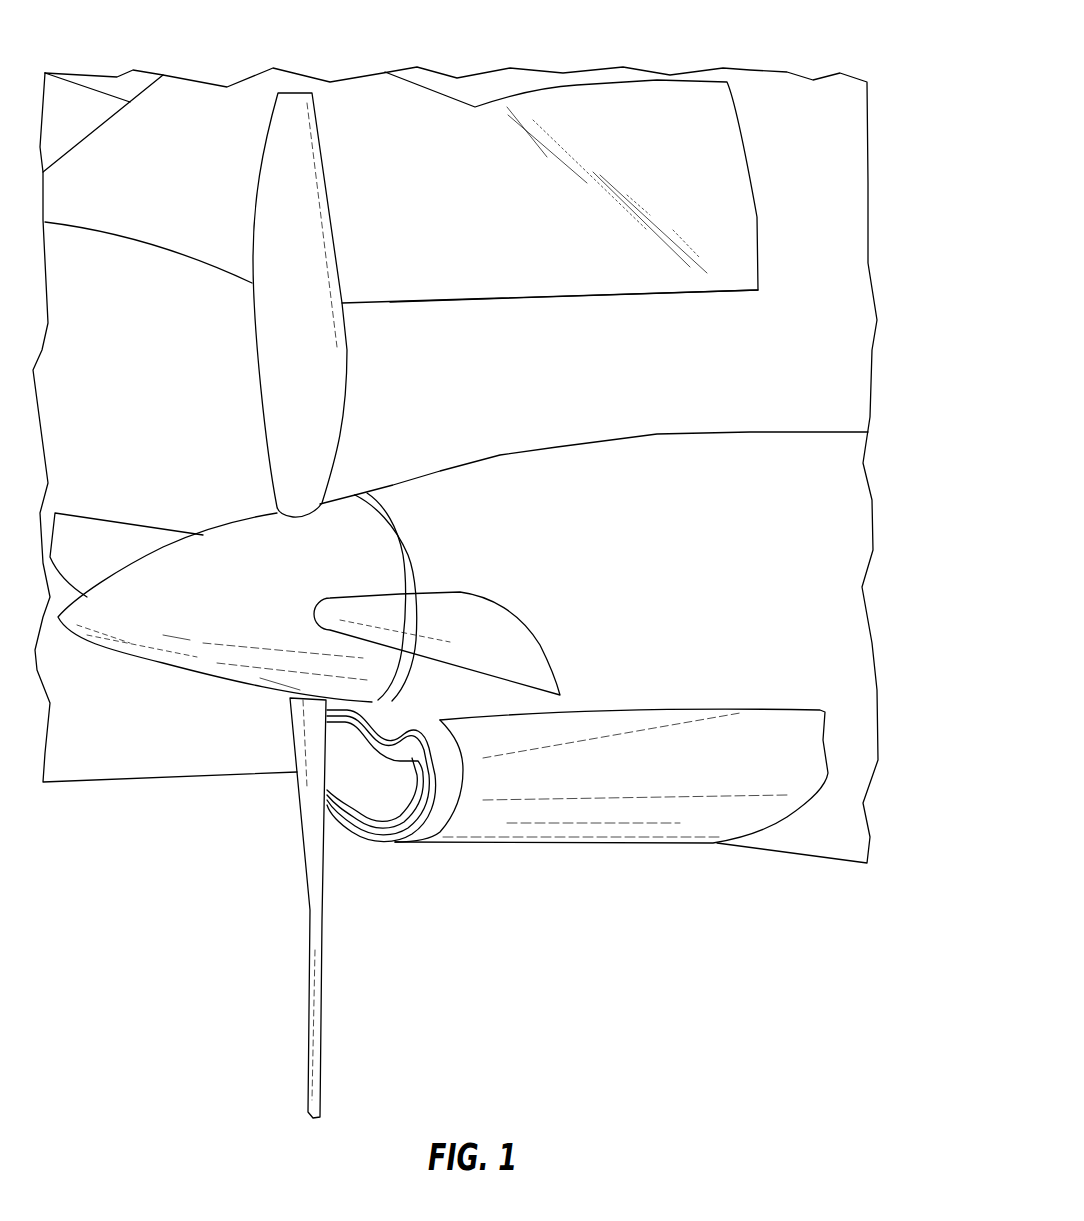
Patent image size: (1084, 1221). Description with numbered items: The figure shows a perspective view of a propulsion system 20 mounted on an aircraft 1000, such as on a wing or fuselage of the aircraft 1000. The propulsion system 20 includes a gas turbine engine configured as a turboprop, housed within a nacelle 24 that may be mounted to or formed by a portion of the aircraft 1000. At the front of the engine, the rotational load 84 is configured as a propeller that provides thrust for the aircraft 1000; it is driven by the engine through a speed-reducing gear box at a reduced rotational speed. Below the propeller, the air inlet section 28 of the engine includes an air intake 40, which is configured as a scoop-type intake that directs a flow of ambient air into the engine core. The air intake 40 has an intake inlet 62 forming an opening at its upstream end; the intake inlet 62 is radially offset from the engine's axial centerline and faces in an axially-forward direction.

The aircraft 1000 is at (817, 232).
The propulsion system 20 is at (620, 654).
The nacelle 24 is at (812, 502).
The air inlet section 28 is at (420, 857).
The air intake 40 is at (565, 813).
The intake inlet 62 is at (365, 797).
The rotational load 84 is at (207, 478).